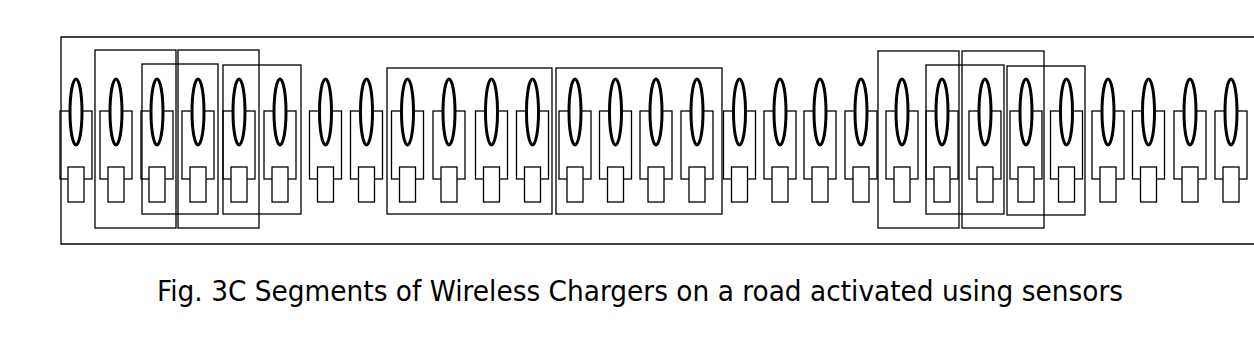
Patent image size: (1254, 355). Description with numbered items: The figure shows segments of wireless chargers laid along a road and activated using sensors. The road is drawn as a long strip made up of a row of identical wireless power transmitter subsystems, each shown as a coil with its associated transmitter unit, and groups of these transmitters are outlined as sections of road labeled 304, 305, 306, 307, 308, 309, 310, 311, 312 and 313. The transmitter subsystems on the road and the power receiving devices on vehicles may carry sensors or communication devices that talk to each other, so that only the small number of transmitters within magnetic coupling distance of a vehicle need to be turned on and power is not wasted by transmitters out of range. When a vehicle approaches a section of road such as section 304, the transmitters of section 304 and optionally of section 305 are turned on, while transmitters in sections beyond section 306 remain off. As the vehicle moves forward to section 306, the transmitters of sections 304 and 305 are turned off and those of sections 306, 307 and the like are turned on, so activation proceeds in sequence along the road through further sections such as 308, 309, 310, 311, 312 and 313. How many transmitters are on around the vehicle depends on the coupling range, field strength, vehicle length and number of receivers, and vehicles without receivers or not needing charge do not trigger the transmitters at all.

The section of the road 304 is at (133, 50).
The section of the road 305 is at (165, 64).
The section of the road 306 is at (228, 50).
The section of the road 307 is at (281, 65).
The wireless charger segment group 308 is at (475, 68).
The wireless charger segment group 309 is at (582, 68).
The wireless charger segment 310 is at (914, 51).
The wireless charger segment 311 is at (945, 65).
The wireless charger segment 312 is at (1012, 51).
The wireless charger segment 313 is at (1062, 66).